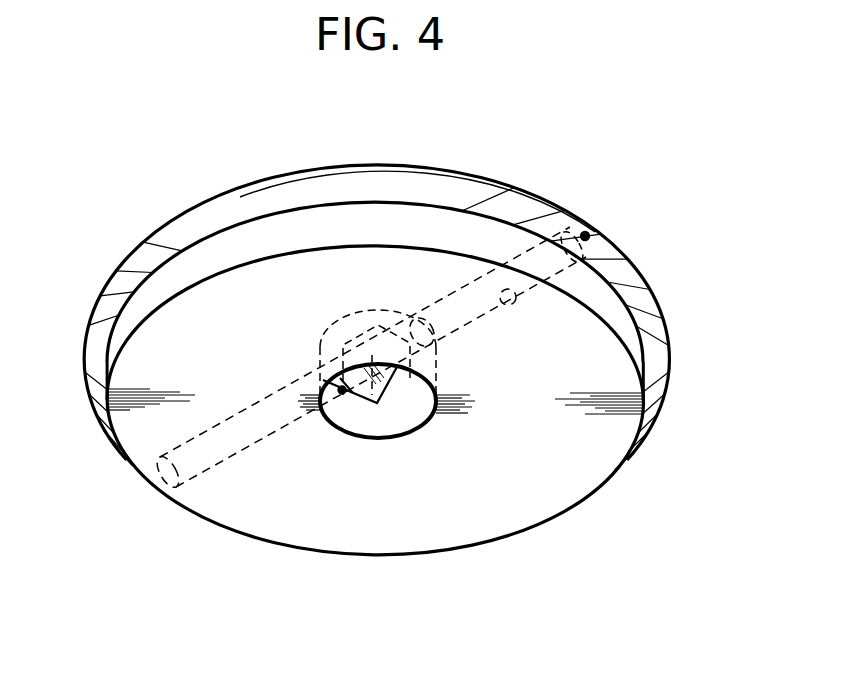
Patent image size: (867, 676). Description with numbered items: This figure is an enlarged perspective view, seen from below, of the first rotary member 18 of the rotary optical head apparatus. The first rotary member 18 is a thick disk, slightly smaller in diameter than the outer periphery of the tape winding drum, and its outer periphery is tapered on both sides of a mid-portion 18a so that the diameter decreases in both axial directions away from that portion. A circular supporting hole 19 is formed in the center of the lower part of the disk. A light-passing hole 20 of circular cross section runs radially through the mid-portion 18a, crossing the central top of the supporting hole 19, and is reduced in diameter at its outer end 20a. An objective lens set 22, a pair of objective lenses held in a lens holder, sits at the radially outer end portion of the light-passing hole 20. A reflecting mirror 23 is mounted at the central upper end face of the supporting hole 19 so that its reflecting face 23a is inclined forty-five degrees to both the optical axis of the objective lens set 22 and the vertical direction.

The first rotary member 18 is at (677, 187).
The mid-portion 18a is at (521, 210).
The supporting hole 19 is at (400, 420).
The light-passing hole 20 is at (510, 305).
The outer end 20a is at (588, 236).
The objective lens set 22 is at (585, 230).
The reflecting mirror 23 is at (362, 312).
The reflecting face 23a is at (360, 388).